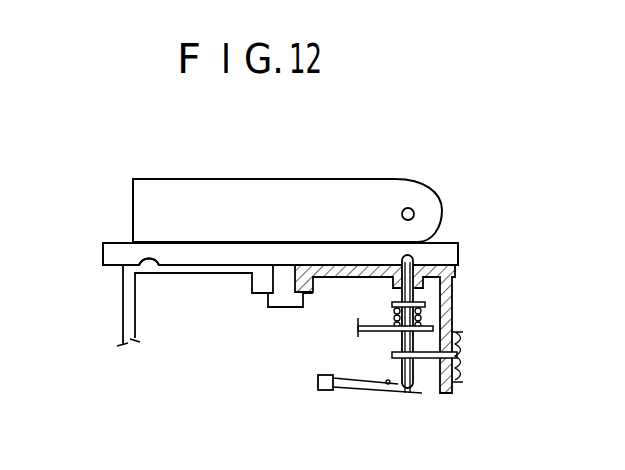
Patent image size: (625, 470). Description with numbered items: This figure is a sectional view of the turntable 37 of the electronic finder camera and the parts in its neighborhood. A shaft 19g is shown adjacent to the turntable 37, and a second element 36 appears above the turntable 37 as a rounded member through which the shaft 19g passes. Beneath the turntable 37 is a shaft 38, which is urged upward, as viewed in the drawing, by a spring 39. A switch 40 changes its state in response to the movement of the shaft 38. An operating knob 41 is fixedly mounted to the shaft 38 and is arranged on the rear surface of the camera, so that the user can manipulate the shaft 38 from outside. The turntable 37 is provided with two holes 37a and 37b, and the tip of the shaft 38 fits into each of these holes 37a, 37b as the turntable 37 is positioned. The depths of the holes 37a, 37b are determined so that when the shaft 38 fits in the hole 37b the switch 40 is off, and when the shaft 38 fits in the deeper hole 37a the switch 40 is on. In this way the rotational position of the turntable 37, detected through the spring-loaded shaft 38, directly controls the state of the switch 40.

The lever 36 is at (382, 182).
The shaft 19g is at (414, 210).
The turntable 37 is at (458, 252).
The hole 37a is at (140, 248).
The hole 37b is at (417, 256).
The shaft 38 is at (455, 276).
The spring 39 is at (450, 305).
The switch 40 is at (384, 390).
The operating knob 41 is at (465, 365).